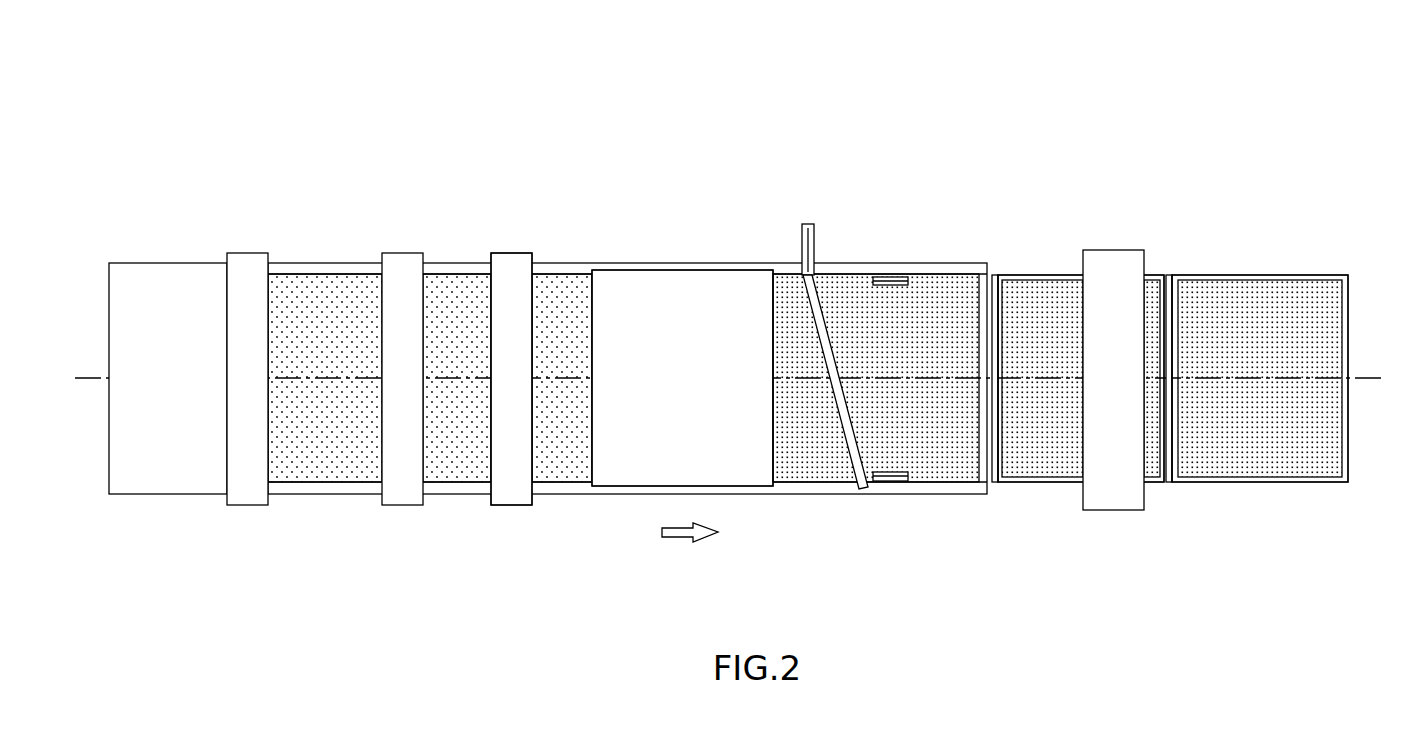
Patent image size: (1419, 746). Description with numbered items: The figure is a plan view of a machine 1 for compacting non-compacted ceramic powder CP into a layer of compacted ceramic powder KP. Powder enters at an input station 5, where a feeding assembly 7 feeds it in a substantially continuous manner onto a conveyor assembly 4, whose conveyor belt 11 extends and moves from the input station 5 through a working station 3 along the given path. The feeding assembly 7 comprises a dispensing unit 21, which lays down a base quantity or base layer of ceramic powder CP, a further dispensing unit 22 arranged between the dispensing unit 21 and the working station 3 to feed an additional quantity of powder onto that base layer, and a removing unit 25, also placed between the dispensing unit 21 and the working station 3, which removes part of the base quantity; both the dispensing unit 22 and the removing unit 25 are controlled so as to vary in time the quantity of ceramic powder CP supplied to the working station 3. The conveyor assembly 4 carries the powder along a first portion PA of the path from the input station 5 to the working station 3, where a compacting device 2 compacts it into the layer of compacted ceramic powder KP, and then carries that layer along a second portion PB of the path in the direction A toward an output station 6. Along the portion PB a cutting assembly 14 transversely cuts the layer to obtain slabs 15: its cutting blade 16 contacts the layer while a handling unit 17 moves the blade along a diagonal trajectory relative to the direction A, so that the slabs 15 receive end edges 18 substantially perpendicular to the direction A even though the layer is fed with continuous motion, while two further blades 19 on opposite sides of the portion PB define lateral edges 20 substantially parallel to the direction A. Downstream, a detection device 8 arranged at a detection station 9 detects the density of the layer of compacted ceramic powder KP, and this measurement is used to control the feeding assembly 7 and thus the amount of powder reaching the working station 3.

The machine 1 is at (907, 126).
The compacting device 2 is at (682, 224).
The working station 3 is at (656, 204).
The conveyor assembly 4 is at (490, 530).
The input station 5 is at (210, 220).
The output station 6 is at (1344, 236).
The feeding assembly 7 is at (372, 180).
The detection device 8 is at (1121, 216).
The detection station 9 is at (1088, 198).
The conveyor belt 11 is at (548, 268).
The cutting assembly 14 is at (885, 217).
The slabs 15 is at (1045, 483).
The cutting blade 16 is at (810, 238).
The handling unit 17 is at (836, 285).
The end edges 18 is at (1348, 298).
The further blades 19 is at (890, 278).
The lateral edges 20 is at (1039, 276).
The dispensing unit 21 is at (242, 514).
The dispensing unit 22 is at (531, 520).
The removing unit 25 is at (402, 514).
The ceramic powder CP is at (318, 265).
The first portion of the given path PA is at (345, 382).
The layer of compacted ceramic powder KP is at (1273, 282).
The second portion of the given path PB is at (1275, 382).
The direction A is at (690, 545).